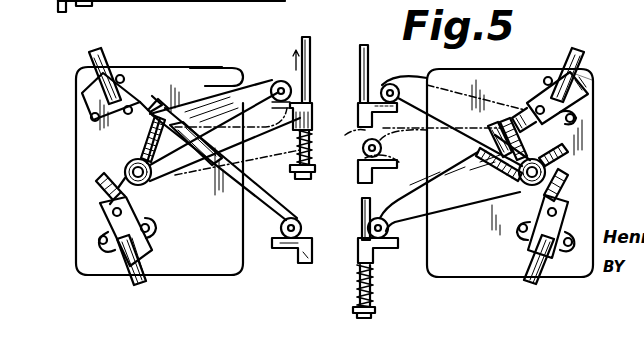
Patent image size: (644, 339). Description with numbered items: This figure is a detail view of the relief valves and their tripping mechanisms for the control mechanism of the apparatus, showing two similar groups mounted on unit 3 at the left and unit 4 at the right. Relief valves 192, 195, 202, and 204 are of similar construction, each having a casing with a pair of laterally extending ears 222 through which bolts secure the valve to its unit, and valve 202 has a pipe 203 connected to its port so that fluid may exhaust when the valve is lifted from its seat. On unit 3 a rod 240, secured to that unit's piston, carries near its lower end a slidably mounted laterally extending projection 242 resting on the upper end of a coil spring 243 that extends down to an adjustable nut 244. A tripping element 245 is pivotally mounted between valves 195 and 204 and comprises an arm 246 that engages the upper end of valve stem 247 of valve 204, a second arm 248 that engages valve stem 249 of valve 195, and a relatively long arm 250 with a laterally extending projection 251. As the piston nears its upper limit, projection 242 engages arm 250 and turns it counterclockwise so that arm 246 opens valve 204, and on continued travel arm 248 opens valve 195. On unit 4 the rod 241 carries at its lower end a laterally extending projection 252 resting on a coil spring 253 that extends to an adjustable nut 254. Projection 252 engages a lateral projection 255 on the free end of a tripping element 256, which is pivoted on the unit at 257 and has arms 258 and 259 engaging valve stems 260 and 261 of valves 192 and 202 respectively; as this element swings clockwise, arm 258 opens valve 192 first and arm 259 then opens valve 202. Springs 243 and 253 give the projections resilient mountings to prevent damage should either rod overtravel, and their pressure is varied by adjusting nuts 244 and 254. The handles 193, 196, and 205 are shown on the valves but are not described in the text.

The unit 3 is at (194, 72).
The unit 4 is at (481, 78).
The relief valve 192 is at (566, 214).
The lower right switch handle 193 is at (528, 269).
The relief valve 195 is at (84, 96).
The upper left switch handle 196 is at (92, 57).
The relief valve 202 is at (586, 72).
The pipe 203 is at (570, 57).
The relief valve 204 is at (118, 248).
The lower left switch handle 205 is at (149, 271).
The ears 222 is at (544, 80).
The rod 240 is at (312, 46).
The rod 241 is at (360, 210).
The laterally extending projection 242 is at (280, 110).
The coil spring 243 is at (315, 146).
The adjustable nut 244 is at (312, 180).
The tripping element 245 is at (213, 120).
The arm 246 is at (124, 177).
The valve stem 247 is at (100, 193).
The second arm 248 is at (165, 110).
The valve stem 249 is at (148, 126).
The arm 250 is at (262, 83).
The laterally extending projection 251 is at (312, 79).
The laterally extending projection 252 is at (383, 243).
The coil spring 253 is at (376, 293).
The adjustable nut 254 is at (377, 311).
The lateral projection 255 is at (396, 207).
The tripping element 256 is at (470, 198).
The pivot 257 is at (520, 190).
The arm 258 is at (568, 152).
The arm 259 is at (485, 152).
The valve stem 260 is at (568, 172).
The valve stem 261 is at (512, 115).